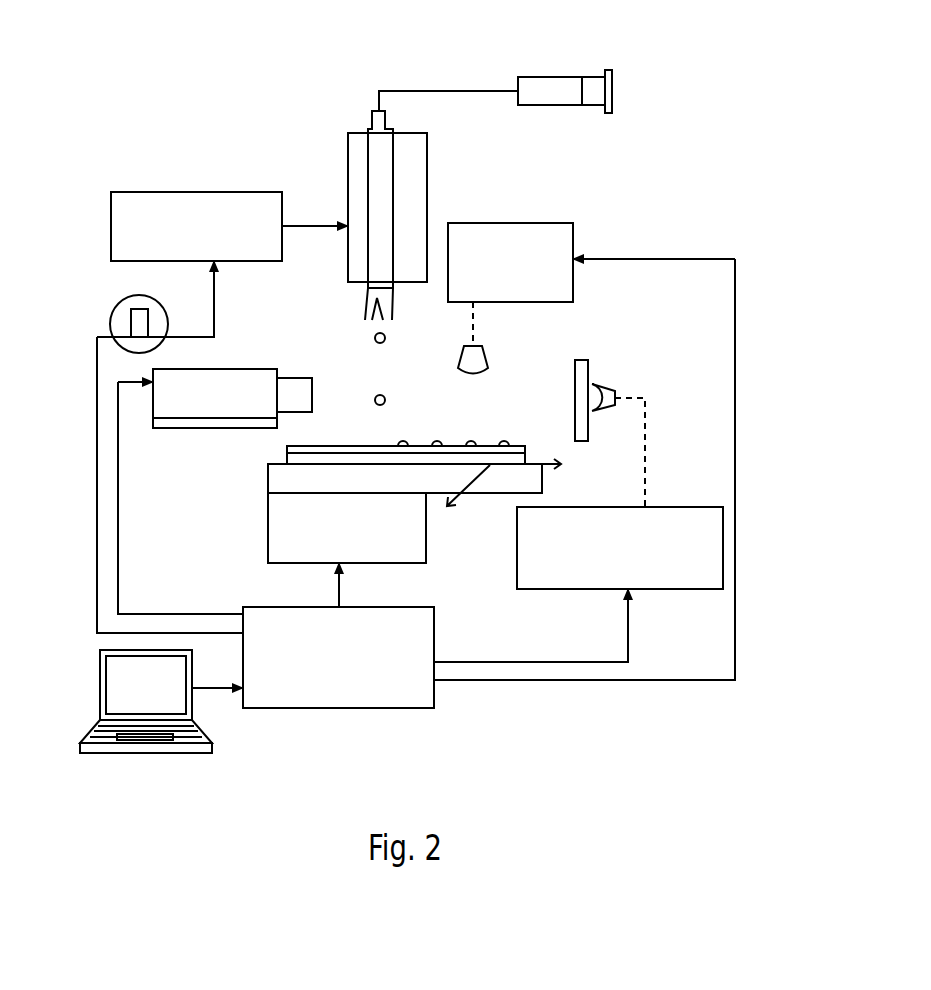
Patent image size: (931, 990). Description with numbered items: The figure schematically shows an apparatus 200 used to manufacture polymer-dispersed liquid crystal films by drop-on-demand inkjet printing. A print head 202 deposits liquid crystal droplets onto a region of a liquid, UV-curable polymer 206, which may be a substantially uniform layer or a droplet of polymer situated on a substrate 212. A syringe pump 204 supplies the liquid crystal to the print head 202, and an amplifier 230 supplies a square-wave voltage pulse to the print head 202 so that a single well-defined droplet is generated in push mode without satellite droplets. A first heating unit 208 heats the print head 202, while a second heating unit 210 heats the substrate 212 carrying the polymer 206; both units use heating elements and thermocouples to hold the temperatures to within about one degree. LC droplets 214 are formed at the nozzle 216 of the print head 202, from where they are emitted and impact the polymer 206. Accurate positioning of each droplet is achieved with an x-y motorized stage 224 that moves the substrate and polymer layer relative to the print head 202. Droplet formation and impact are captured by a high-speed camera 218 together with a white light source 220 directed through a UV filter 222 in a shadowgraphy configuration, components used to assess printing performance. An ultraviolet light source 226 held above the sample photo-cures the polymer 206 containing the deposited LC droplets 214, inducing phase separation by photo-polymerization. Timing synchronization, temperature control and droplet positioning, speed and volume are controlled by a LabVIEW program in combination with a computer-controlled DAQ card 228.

The apparatus 200 is at (150, 62).
The print head 202 is at (373, 198).
The syringe pump 204 is at (582, 77).
The UV-curable polymer 206 is at (452, 446).
The first heating unit 208 is at (358, 133).
The second heating unit 210 is at (492, 493).
The substrate 212 is at (490, 464).
The LC droplets 214 is at (375, 338).
The nozzle 216 is at (377, 297).
The high-speed camera 218 is at (197, 428).
The white light source 220 is at (671, 589).
The UV filter 222 is at (590, 372).
The x-y motorized stage 224 is at (580, 465).
The ultraviolet light source 226 is at (525, 223).
The DAQ card 228 is at (337, 682).
The amplifier 230 is at (203, 192).